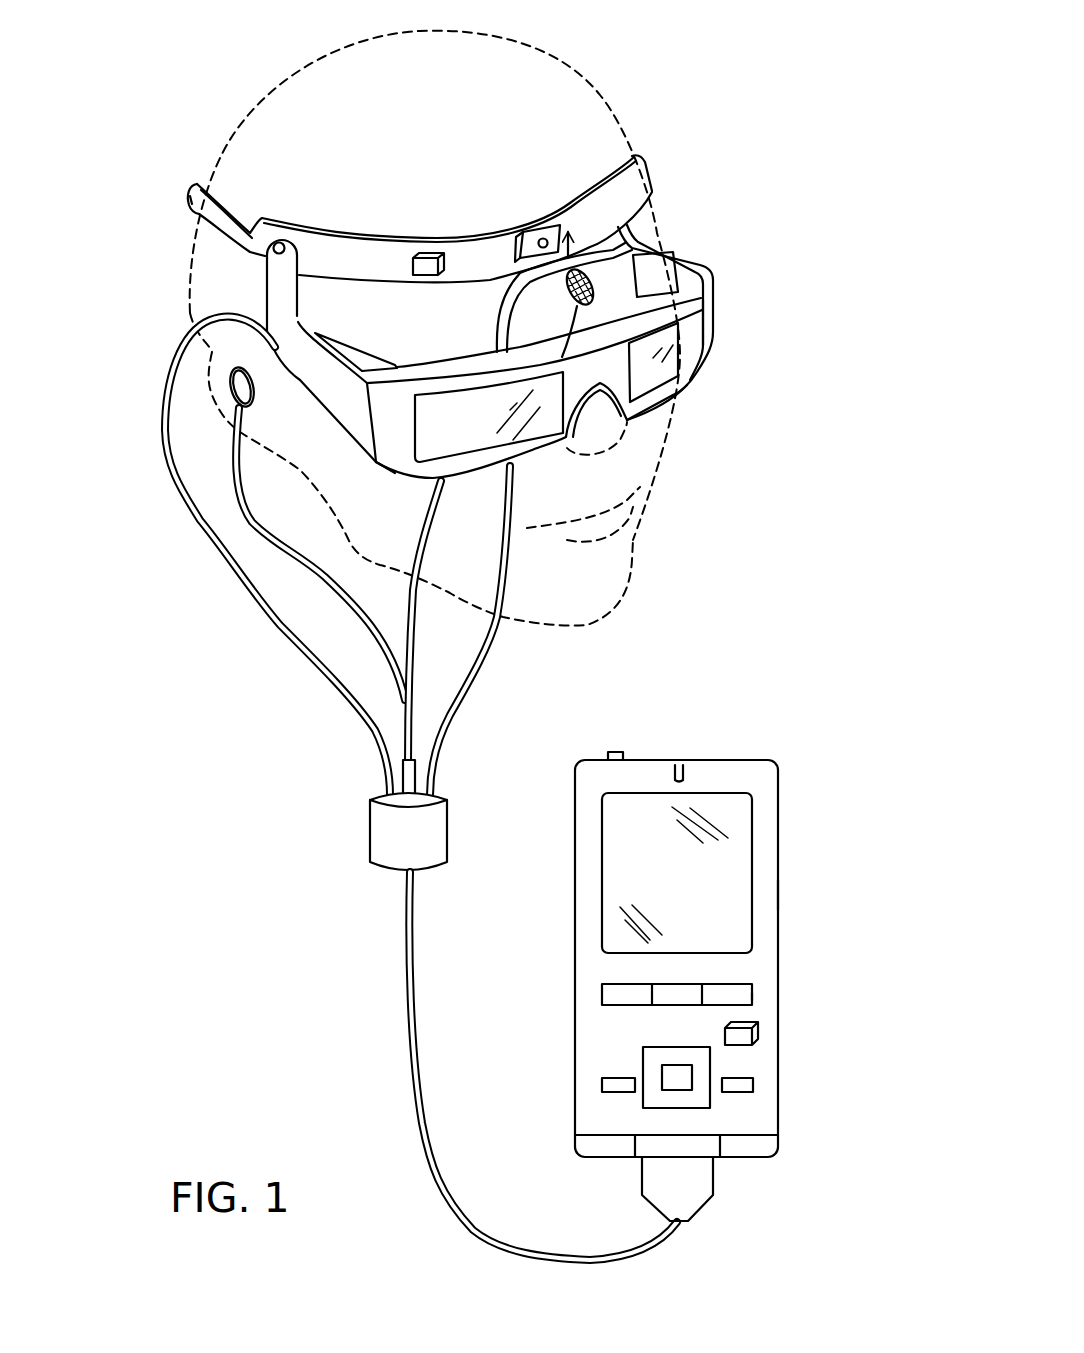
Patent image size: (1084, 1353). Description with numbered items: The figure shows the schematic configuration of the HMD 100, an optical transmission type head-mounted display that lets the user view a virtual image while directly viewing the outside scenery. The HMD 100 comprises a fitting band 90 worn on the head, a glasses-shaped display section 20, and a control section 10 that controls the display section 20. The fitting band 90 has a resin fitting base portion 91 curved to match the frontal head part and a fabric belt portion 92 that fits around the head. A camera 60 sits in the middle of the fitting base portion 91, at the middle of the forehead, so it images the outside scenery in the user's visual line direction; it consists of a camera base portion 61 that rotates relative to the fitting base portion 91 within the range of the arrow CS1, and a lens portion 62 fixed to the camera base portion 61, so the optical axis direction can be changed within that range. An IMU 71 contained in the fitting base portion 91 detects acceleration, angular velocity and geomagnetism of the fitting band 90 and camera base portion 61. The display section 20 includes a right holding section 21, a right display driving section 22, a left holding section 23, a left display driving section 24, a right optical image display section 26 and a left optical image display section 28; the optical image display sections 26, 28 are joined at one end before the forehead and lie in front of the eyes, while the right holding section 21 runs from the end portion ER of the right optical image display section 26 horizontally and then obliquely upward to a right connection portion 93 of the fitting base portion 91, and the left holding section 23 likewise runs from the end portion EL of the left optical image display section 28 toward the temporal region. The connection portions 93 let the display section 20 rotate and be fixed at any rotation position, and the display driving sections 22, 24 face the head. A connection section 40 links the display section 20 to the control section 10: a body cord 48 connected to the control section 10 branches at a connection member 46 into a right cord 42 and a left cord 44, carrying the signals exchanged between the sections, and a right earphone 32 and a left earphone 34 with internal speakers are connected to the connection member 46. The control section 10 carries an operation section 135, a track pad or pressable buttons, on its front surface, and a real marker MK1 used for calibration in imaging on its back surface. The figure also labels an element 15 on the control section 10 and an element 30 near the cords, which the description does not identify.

The HMD 100 is at (790, 74).
The control section 10 is at (715, 922).
The lighting section 15 is at (760, 1034).
The display section 20 is at (520, 355).
The right holding section 21 is at (320, 404).
The right display driving section 22 is at (352, 347).
The left holding section 23 is at (693, 248).
The left display driving section 24 is at (650, 253).
The right optical image display section 26 is at (466, 452).
The left optical image display section 28 is at (690, 360).
The earphone plug 30 is at (418, 772).
The right earphone 32 is at (237, 388).
The left earphone 34 is at (571, 290).
The connection section 40 is at (421, 788).
The right cord 42 is at (268, 614).
The left cord 44 is at (481, 650).
The connection member 46 is at (435, 831).
The body cord 48 is at (413, 1024).
The camera 60 is at (518, 202).
The camera base portion 61 is at (518, 243).
The lens portion 62 is at (543, 238).
The IMU 71 is at (418, 252).
The fitting band 90 is at (430, 187).
The fitting base portion 91 is at (613, 170).
The belt portion 92 is at (206, 192).
The connection portion 93 is at (272, 251).
The operation section 135 is at (752, 967).
The arrow CS1 is at (570, 222).
The end portion EL is at (714, 312).
The end portion ER is at (390, 455).
The real marker MK1 is at (778, 895).